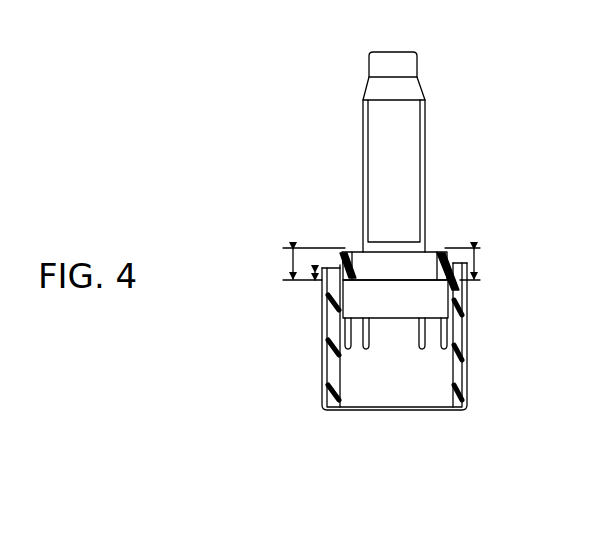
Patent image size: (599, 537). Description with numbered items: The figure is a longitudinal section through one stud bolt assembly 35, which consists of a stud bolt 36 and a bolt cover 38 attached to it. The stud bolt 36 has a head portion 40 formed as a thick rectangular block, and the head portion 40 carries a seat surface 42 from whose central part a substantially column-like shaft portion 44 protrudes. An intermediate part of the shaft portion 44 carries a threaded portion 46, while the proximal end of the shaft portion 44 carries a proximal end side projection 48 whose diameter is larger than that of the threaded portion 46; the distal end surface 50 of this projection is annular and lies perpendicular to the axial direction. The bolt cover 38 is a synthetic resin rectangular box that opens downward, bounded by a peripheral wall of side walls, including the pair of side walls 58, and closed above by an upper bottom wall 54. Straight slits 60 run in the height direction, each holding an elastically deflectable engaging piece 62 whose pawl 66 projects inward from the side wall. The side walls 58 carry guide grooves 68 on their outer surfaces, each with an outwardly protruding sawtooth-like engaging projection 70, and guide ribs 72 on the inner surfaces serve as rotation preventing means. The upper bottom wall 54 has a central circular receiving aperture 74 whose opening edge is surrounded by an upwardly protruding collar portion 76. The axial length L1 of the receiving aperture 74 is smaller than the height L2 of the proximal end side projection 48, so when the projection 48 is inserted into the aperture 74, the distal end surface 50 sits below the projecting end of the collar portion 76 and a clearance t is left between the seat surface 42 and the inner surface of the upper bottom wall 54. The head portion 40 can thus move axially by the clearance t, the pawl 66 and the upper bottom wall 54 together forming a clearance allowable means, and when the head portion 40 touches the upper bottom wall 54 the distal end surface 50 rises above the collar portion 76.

The stud bolt assembly 35 is at (398, 182).
The stud bolt 36 is at (357, 141).
The bolt cover 38 is at (396, 374).
The head portion 40 is at (433, 293).
The seat surface 42 is at (393, 262).
The shaft portion 44 is at (392, 70).
The threaded portion 46 is at (402, 128).
The proximal end side projection 48 is at (405, 260).
The distal end surface 50 is at (427, 251).
The upper bottom wall 54 is at (332, 268).
The side wall 58 is at (331, 410).
The slit 60 is at (392, 400).
The engaging piece 62 is at (354, 357).
The pawl 66 is at (356, 328).
The guide groove 68 is at (322, 383).
The engaging projection 70 is at (325, 352).
The guide rib 72 is at (334, 318).
The receiving aperture 74 is at (352, 250).
The collar portion 76 is at (345, 262).
The axial length of receiving aperture L1 is at (305, 264).
The height of proximal end side projection L2 is at (472, 264).
The clearance t is at (337, 309).